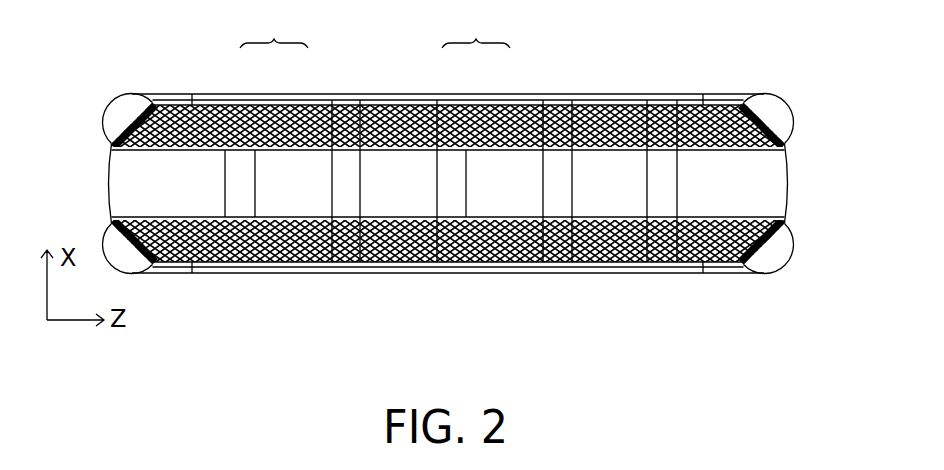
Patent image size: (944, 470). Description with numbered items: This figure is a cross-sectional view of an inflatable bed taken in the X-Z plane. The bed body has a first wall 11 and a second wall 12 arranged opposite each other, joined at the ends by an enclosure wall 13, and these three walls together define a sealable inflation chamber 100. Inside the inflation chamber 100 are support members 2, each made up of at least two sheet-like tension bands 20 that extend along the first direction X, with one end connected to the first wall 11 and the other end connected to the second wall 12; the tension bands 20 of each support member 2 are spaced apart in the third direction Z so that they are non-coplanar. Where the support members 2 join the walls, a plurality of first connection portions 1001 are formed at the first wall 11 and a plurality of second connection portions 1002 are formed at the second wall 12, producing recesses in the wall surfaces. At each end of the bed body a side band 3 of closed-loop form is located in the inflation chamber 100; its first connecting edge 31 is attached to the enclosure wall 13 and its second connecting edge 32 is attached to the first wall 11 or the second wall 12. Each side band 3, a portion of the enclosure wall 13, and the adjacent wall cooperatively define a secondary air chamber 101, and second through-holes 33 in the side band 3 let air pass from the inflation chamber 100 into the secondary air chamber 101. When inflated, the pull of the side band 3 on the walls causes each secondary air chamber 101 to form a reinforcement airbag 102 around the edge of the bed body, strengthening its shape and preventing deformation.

The support member 2 is at (375, 31).
The tension band 20 is at (246, 150).
The second connecting edge 32 is at (158, 100).
The first connection portion 1001 is at (345, 94).
The second connection portion 1002 is at (243, 262).
The first wall 11 is at (608, 105).
The second wall 12 is at (601, 267).
The enclosure wall 13 is at (789, 175).
The side band 3 is at (411, 262).
The second through-hole 33 is at (521, 262).
The first connecting edge 31 is at (112, 150).
The inflation chamber 100 is at (120, 184).
The secondary air chamber 101 is at (124, 117).
The reinforcement airbag 102 is at (790, 112).